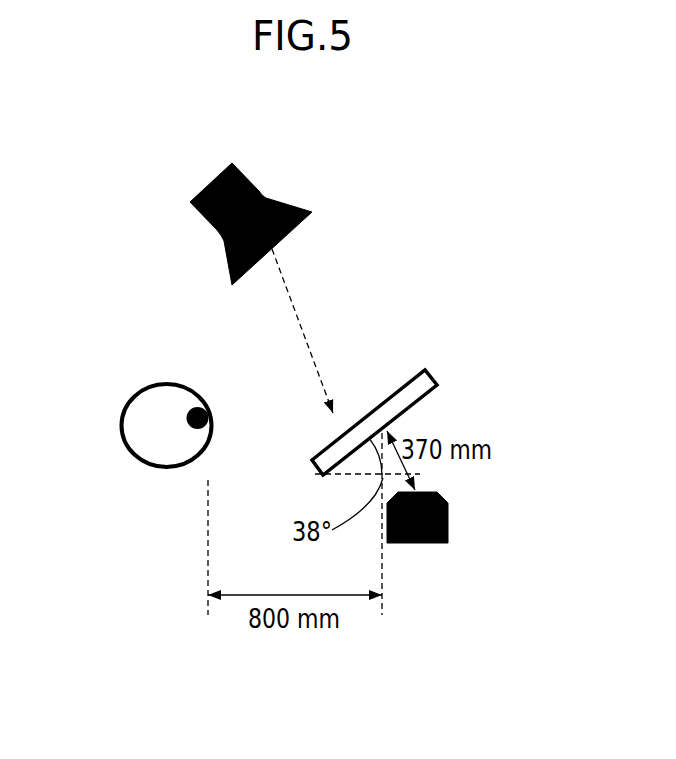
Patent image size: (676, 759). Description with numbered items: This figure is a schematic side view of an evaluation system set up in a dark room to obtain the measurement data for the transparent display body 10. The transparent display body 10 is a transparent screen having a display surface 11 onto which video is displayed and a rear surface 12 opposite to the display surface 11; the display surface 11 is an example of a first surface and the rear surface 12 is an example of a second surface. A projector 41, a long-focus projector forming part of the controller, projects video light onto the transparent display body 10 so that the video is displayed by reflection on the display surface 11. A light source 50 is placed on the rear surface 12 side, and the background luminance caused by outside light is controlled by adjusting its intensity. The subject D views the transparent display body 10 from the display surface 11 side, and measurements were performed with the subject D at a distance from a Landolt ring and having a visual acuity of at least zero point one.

The light source 50 is at (250, 171).
The transparent display body 10 is at (393, 402).
The rear surface 12 is at (413, 377).
The display surface 11 is at (427, 395).
The projector 41 is at (448, 520).
The subject D is at (118, 425).